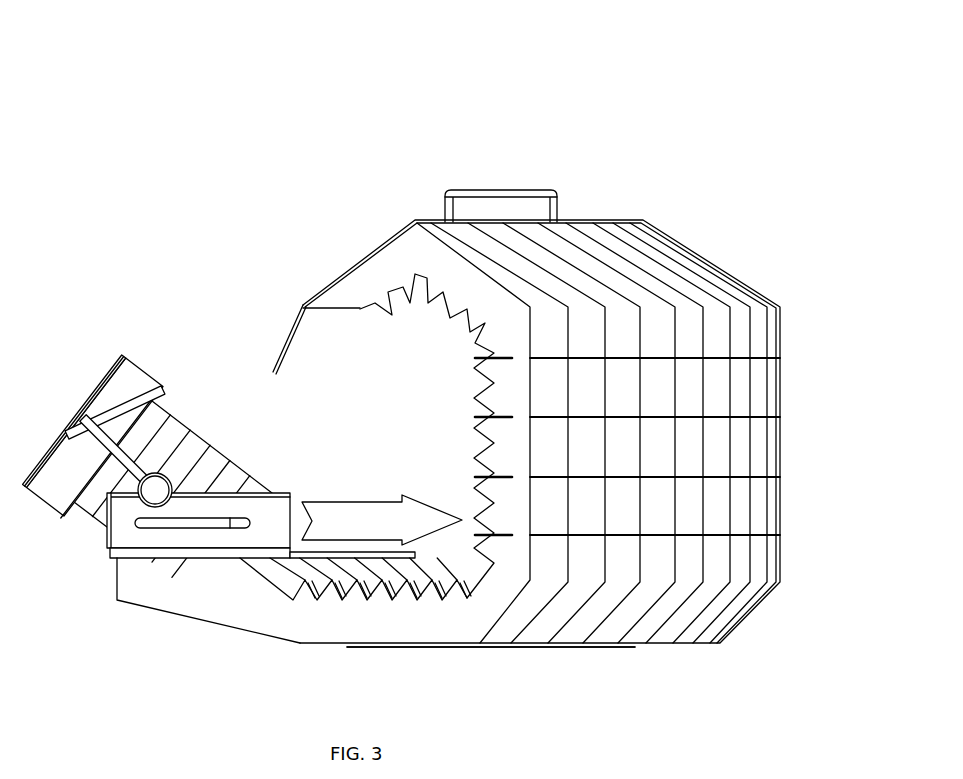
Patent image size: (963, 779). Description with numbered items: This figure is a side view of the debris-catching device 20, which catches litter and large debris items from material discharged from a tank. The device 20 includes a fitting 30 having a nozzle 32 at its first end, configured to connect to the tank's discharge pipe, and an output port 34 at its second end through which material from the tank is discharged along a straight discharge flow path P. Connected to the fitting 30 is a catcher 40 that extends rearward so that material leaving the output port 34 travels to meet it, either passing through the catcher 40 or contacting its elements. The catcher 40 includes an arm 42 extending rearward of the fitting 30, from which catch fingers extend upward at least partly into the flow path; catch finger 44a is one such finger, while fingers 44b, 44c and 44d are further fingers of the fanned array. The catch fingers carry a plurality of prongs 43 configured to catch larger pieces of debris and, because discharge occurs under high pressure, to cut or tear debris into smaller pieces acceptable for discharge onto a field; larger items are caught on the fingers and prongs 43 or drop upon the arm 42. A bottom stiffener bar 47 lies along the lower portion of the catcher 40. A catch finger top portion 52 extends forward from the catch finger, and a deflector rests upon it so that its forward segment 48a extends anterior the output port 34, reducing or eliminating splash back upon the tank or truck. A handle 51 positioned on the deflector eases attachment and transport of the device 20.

The device 20 is at (188, 72).
The fitting 30 is at (130, 313).
The nozzle 32 is at (95, 357).
The output port 34 is at (313, 490).
The catcher 40 is at (622, 130).
The arm 42 is at (355, 623).
The prongs 43 is at (496, 514).
The catch finger 44a is at (507, 378).
The second rail 44b is at (545, 407).
The third rail 44c is at (585, 457).
The fourth rail 44d is at (630, 498).
The bottom stiffener bar 47 is at (397, 648).
The forward segment 48a is at (282, 345).
The handle 51 is at (527, 163).
The catch finger top portion 52 is at (440, 260).